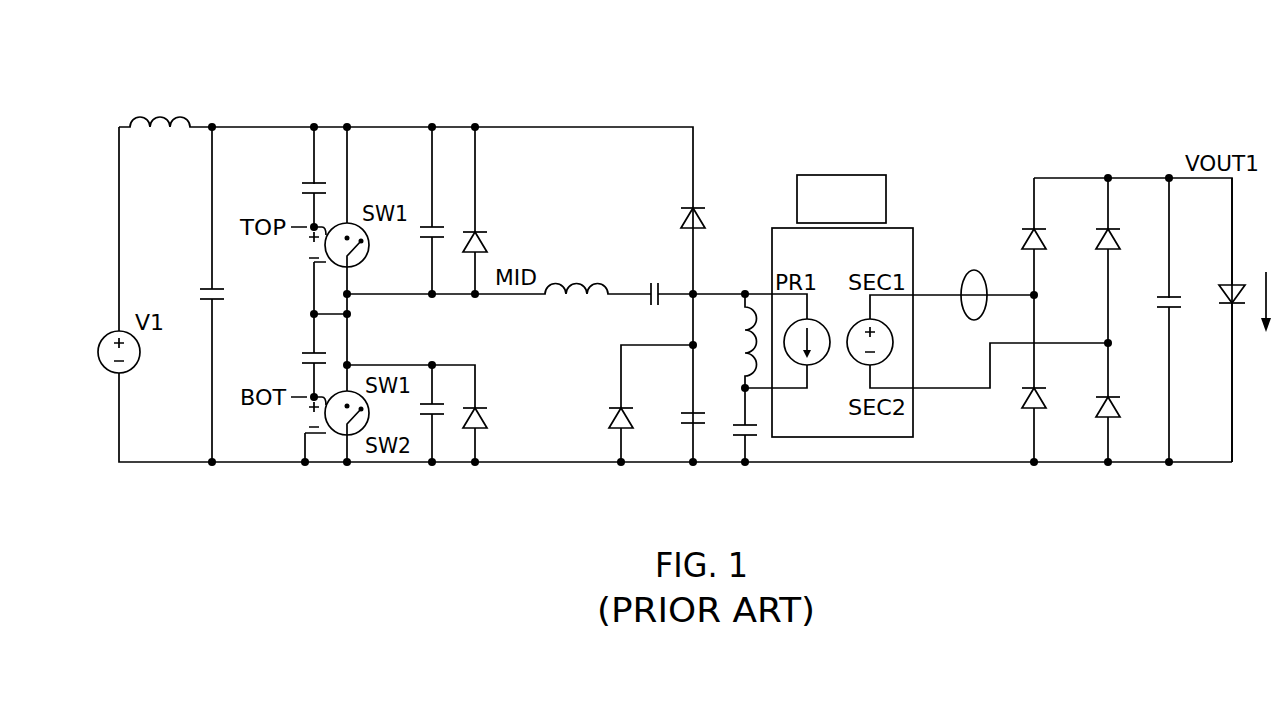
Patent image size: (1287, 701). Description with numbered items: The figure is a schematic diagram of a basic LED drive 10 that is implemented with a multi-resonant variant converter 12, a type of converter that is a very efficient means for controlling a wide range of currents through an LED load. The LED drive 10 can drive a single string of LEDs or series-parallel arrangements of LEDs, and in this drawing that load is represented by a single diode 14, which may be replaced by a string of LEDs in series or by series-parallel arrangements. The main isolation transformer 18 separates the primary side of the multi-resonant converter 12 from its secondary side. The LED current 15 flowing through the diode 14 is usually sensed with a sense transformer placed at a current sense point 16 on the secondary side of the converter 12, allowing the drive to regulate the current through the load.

The LED drive 10 is at (1015, 66).
The multi-resonant variant converter 12 is at (758, 150).
The single diode 14 is at (1238, 283).
The LED current 15 is at (1257, 308).
The current sense point 16 is at (974, 270).
The main isolation transformer 18 is at (845, 175).